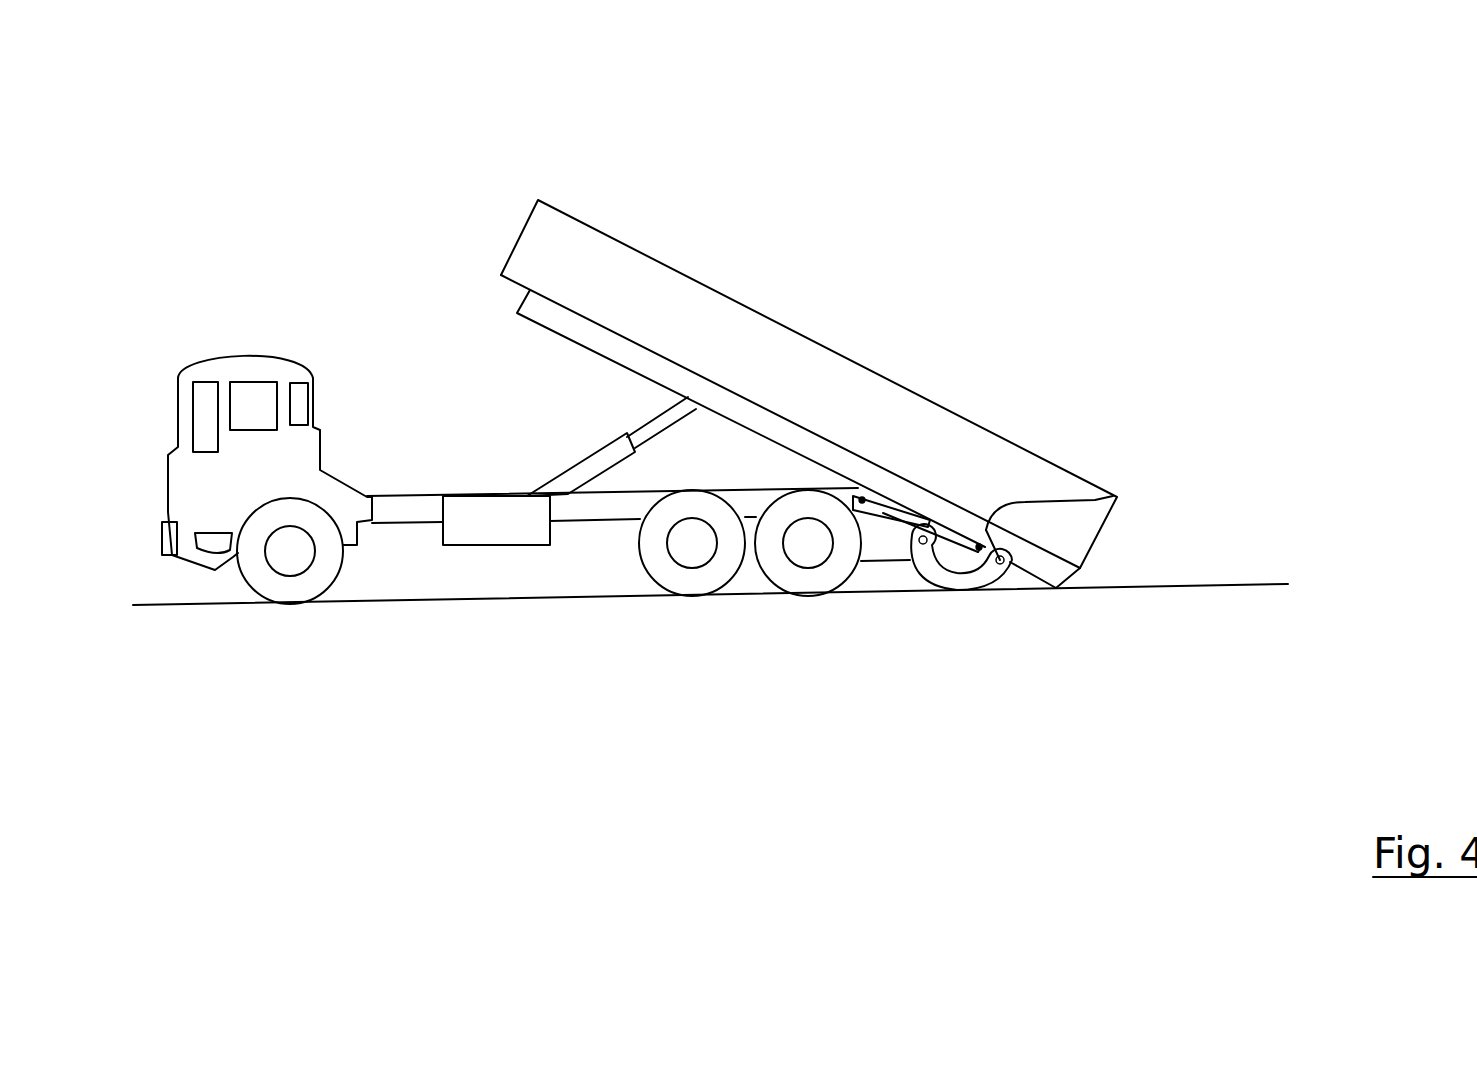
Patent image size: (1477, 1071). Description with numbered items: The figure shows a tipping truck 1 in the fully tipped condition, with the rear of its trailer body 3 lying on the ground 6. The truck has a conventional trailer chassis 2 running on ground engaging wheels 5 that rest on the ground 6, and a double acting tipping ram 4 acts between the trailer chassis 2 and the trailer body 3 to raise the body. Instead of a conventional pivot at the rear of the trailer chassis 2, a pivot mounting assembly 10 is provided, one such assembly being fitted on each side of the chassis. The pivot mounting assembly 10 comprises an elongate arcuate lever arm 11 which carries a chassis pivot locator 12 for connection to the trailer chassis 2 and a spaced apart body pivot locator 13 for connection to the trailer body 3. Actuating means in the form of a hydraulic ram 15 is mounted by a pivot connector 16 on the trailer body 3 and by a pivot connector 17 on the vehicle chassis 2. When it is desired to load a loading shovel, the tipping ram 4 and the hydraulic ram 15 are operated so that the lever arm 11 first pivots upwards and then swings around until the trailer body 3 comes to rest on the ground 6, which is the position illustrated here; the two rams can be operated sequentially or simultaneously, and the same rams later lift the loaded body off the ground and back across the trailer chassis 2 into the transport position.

The tipping truck 1 is at (767, 147).
The trailer chassis 2 is at (617, 508).
The trailer body 3 is at (530, 243).
The tipping ram 4 is at (588, 460).
The ground engaging wheels 5 is at (290, 551).
The ground 6 is at (190, 605).
The pivot mounting assembly 10 is at (1040, 627).
The lever arm 11 is at (950, 567).
The chassis pivot locator 12 is at (913, 553).
The body pivot locator 13 is at (1000, 560).
The hydraulic ram 15 is at (887, 510).
The pivot connector 16 is at (1115, 494).
The pivot connector 17 is at (863, 498).